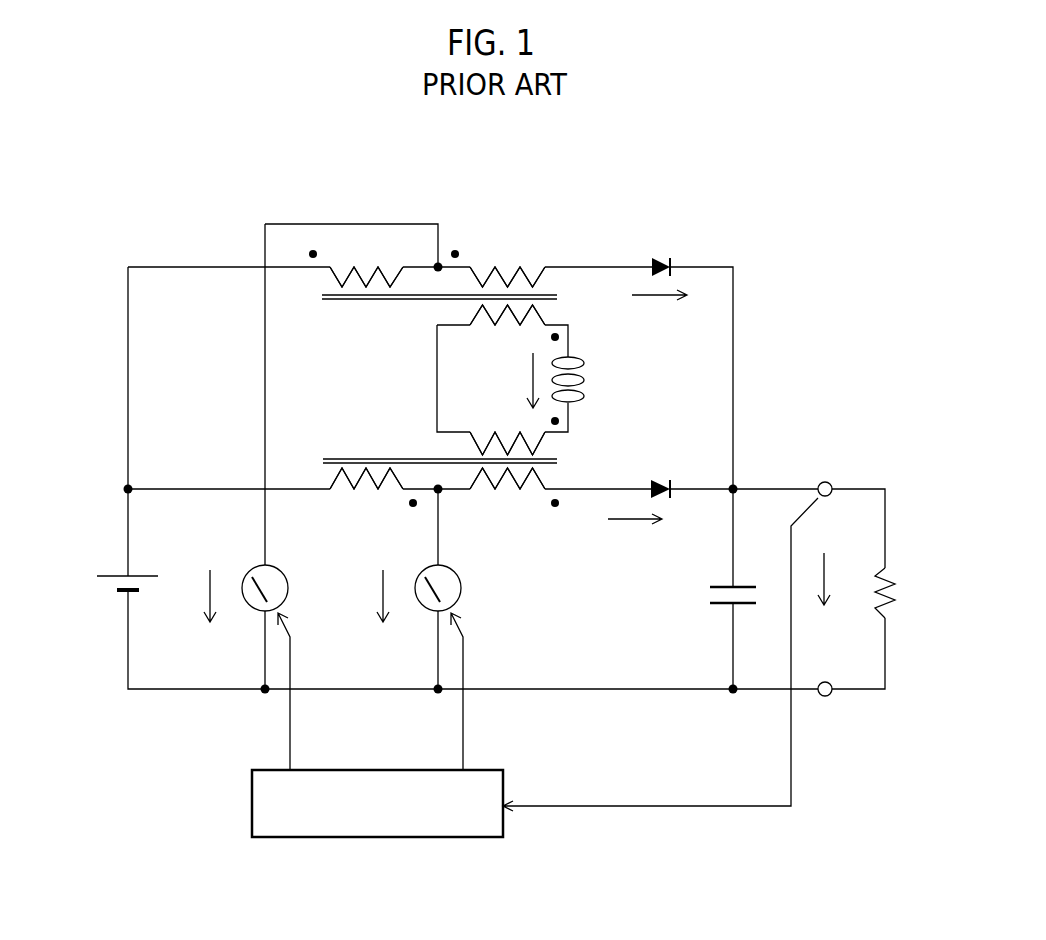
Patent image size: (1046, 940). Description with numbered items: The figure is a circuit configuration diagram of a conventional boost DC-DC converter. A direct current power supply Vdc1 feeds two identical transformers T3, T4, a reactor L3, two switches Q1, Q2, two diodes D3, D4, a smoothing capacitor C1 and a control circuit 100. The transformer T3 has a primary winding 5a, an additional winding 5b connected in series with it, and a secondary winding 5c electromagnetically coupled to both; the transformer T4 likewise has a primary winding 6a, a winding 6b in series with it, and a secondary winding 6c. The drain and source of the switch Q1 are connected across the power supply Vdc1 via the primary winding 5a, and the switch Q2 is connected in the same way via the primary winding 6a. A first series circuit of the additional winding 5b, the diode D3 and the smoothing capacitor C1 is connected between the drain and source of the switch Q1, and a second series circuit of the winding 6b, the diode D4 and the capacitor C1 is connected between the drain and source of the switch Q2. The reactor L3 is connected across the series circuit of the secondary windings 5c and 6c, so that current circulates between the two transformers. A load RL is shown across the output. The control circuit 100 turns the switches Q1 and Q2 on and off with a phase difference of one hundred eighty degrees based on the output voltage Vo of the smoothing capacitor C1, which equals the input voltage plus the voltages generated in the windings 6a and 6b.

The primary winding 5a is at (372, 240).
The additional winding 5b is at (510, 240).
The secondary winding 5c is at (485, 323).
The primary winding 6a is at (345, 495).
The winding 6b is at (535, 495).
The secondary winding 6c is at (527, 425).
The control circuit 100 is at (377, 840).
The transformer T3 is at (425, 293).
The transformer T4 is at (425, 460).
The reactor L3 is at (554, 380).
The diode D3 is at (659, 277).
The diode D4 is at (641, 501).
The switch Q1 is at (255, 657).
The switch Q2 is at (428, 657).
The smoothing capacitor C1 is at (718, 596).
The load resistor RL is at (864, 594).
The direct current power supply Vdc1 is at (106, 589).
The output voltage Vo is at (765, 487).